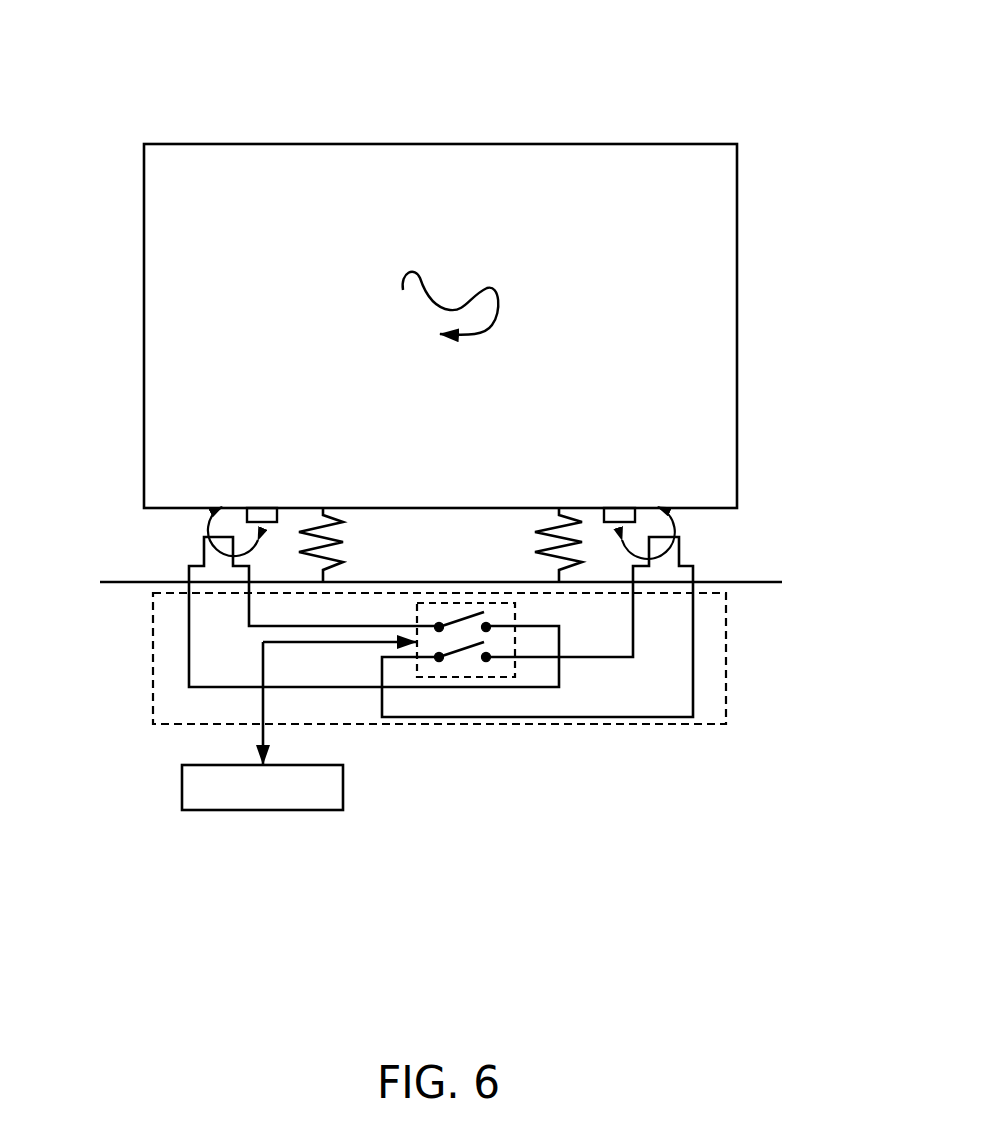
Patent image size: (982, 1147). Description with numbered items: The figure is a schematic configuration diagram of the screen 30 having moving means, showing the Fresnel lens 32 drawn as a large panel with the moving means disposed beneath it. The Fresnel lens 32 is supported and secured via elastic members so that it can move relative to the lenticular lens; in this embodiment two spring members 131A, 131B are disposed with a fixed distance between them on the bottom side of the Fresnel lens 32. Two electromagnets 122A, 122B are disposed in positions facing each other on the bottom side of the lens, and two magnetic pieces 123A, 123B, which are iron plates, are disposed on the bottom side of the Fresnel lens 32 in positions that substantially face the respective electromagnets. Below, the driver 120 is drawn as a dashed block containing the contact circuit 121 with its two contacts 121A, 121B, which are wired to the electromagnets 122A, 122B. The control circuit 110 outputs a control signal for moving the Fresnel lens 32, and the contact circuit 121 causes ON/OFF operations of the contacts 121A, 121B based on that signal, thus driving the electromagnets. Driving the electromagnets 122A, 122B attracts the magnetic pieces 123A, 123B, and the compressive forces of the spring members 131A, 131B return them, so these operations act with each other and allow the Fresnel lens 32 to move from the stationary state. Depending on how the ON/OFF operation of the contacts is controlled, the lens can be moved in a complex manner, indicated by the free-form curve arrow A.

The screen 30 is at (540, 76).
The Fresnel lens 32 is at (533, 144).
The free-form curve arrow A is at (487, 288).
The spring member 131A is at (327, 508).
The spring member 131B is at (547, 508).
The magnetic piece 123A is at (257, 513).
The magnetic piece 123B is at (620, 513).
The electromagnet 122A is at (210, 558).
The electromagnet 122B is at (672, 558).
The driver 120 is at (483, 656).
The contact circuit 121 is at (491, 656).
The contact 121A is at (460, 612).
The contact 121B is at (474, 645).
The control circuit 110 is at (343, 785).